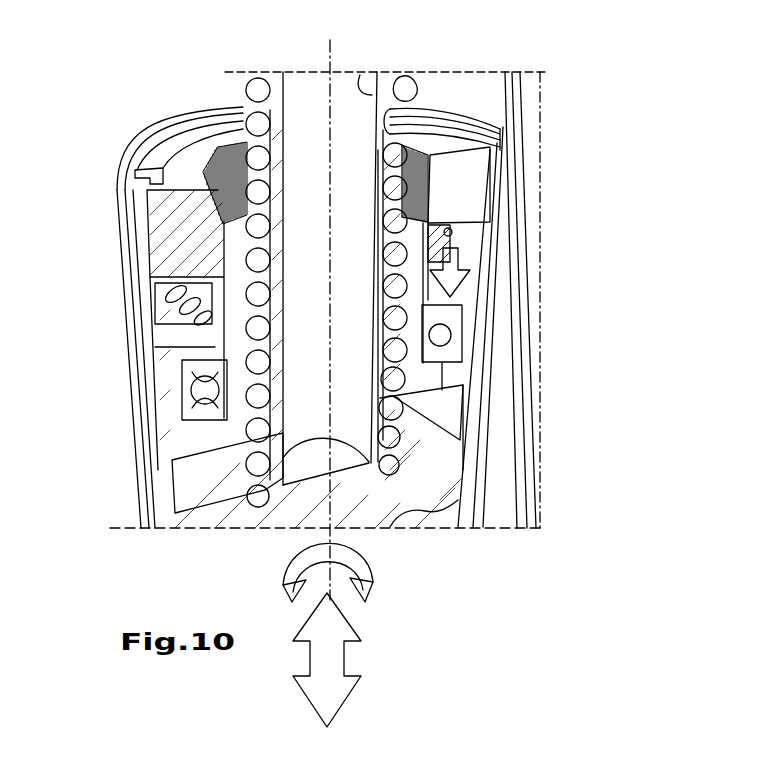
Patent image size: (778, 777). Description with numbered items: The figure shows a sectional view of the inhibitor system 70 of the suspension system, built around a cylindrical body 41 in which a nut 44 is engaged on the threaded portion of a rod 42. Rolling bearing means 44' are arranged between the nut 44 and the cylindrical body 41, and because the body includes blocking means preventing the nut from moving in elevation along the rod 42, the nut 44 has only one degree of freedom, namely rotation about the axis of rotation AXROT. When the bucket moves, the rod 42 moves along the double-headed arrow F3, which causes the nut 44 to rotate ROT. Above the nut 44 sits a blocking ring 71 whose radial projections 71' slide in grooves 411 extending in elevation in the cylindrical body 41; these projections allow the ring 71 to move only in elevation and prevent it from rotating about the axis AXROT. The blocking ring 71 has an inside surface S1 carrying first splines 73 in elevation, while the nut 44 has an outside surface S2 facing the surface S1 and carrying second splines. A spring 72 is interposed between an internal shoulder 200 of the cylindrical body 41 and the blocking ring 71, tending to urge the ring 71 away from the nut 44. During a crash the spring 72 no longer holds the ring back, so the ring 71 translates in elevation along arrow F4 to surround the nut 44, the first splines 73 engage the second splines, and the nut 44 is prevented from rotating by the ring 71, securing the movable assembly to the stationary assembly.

The inhibitor system 70 is at (90, 231).
The blocking ring 71 is at (157, 257).
The radial projections 71' is at (494, 113).
The spring 72 is at (452, 258).
The first splines 73 is at (462, 135).
The cylindrical body 41 is at (145, 428).
The grooves 411 is at (465, 130).
The rod 42 is at (326, 250).
The nut 44 is at (491, 455).
The rolling bearing means 44' is at (522, 349).
The internal shoulder 200 is at (210, 347).
The inside surface S1 is at (257, 187).
The outside surface S2 is at (147, 300).
The double-headed arrow F3 is at (327, 660).
The arrow F4 is at (473, 287).
The rotation ROT is at (358, 572).
The axis of rotation AXROT is at (330, 43).